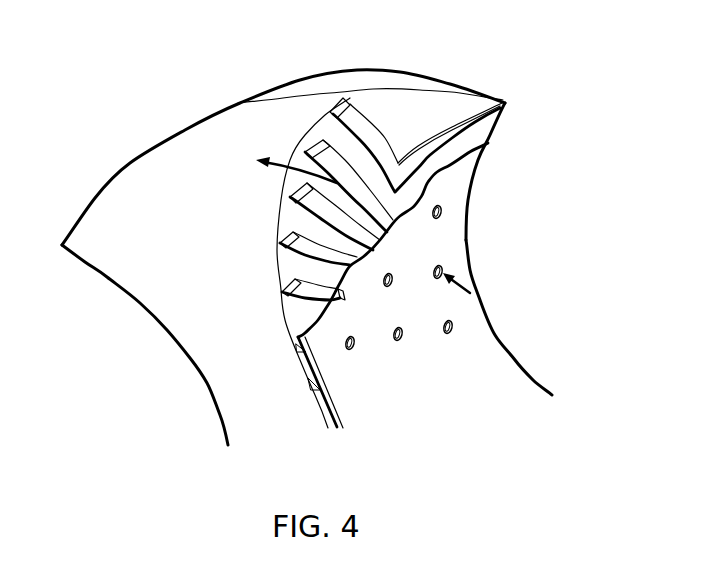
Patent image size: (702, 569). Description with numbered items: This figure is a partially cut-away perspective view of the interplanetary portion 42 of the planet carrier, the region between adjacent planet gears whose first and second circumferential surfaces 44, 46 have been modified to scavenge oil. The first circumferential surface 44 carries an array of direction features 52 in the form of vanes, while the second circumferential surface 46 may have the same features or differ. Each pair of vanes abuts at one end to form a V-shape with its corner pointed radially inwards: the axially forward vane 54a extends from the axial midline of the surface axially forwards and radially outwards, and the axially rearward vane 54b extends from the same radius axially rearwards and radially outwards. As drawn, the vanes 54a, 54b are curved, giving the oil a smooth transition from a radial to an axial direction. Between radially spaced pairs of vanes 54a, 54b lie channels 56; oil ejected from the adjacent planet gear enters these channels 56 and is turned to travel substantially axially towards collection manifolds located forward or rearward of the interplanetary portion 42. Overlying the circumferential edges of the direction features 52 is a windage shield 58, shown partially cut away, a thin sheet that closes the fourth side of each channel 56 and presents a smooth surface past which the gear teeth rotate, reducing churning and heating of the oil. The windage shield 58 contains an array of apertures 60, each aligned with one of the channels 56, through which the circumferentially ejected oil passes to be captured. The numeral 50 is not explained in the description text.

The interplanetary portion 42 is at (135, 172).
The first circumferential surface 44 is at (468, 307).
The second circumferential surface 46 is at (168, 333).
The upstream rim 50 is at (303, 88).
The direction features 52 is at (310, 290).
The axially forward vane 54a is at (357, 123).
The axially rearward vane 54b is at (465, 123).
The channels 56 is at (310, 222).
The windage shield 58 is at (457, 237).
The apertures 60 is at (407, 337).